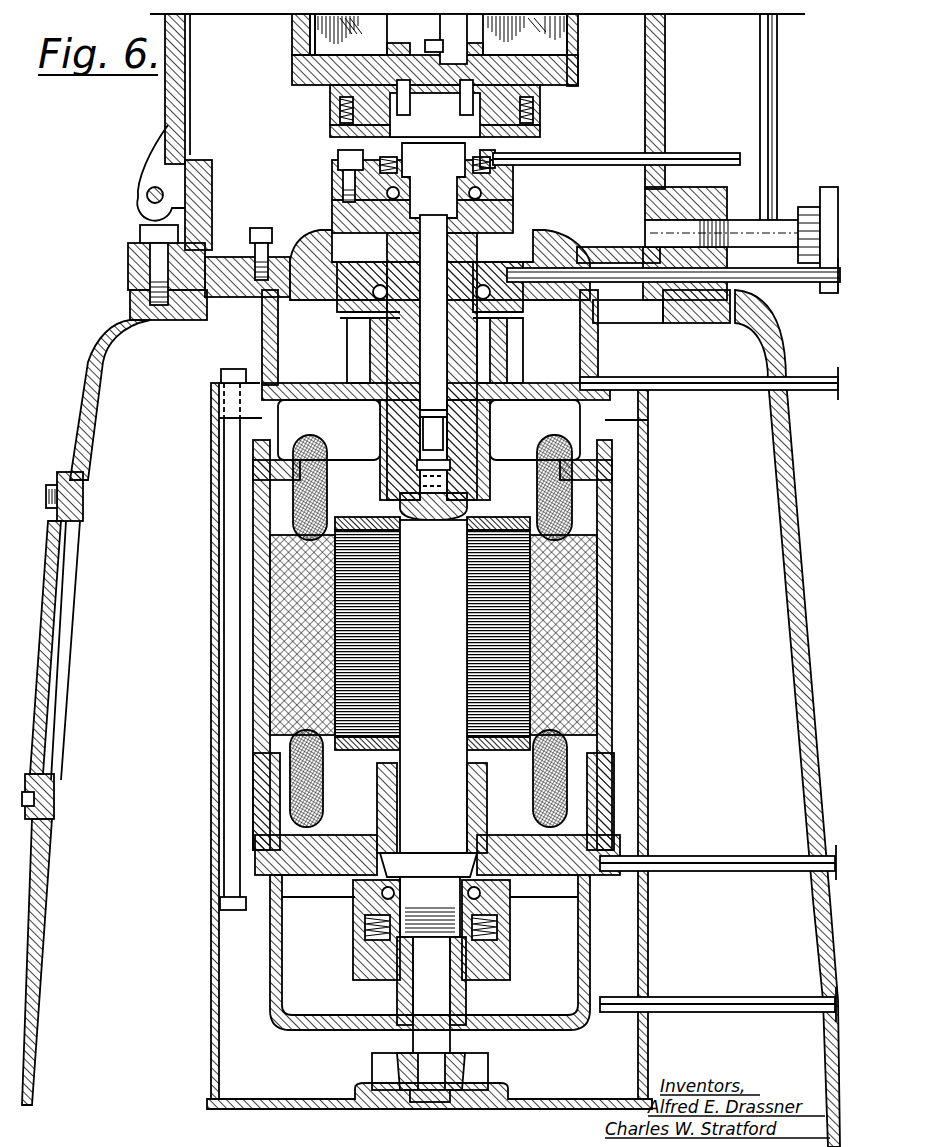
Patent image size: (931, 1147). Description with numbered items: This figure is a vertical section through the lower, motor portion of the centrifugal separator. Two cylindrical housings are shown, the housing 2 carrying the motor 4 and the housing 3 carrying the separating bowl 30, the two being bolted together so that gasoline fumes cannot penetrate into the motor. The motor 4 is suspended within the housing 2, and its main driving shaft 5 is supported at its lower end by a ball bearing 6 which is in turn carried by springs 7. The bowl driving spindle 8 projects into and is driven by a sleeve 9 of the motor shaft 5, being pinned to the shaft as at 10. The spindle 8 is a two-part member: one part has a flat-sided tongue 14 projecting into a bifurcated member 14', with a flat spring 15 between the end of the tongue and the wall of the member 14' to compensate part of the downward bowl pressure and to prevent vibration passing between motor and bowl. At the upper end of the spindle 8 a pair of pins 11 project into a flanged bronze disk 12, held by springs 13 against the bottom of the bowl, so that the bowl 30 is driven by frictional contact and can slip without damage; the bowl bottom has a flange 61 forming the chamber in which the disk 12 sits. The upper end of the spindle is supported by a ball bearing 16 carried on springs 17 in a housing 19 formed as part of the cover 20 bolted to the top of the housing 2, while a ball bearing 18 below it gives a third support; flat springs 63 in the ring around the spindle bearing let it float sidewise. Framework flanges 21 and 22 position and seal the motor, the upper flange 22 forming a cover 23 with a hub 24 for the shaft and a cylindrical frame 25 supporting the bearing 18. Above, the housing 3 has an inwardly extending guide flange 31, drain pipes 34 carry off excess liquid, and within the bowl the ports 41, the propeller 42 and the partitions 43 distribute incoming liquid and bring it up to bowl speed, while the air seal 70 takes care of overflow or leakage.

The housing 2 is at (785, 457).
The housing 3 is at (666, 50).
The motor 4 is at (600, 630).
The motor or main driving shaft 5 is at (432, 809).
The ball bearing 6 is at (492, 900).
The springs 7 is at (492, 937).
The bowl driving spindle 8 is at (433, 312).
The sleeve 9 is at (402, 359).
The pin 10 is at (410, 480).
The pins 11 is at (466, 105).
The flanged bronze disk 12 is at (543, 95).
The springs 13 is at (543, 127).
The flat-sided tongue 14 is at (475, 438).
The bifurcated member 14' is at (475, 481).
The flat spring 15 is at (427, 467).
The ball bearing 16 is at (515, 197).
The springs 17 is at (515, 213).
The ball bearing 18 is at (492, 300).
The housing 19 is at (336, 181).
The cover 20 is at (312, 228).
The framework flange 21 is at (607, 825).
The framework flange 22 is at (612, 450).
The cover 23 is at (302, 398).
The hub 24 is at (494, 420).
The cylindrical frame 25 is at (507, 355).
The separating bowl 30 is at (580, 33).
The guide flange 31 is at (292, 29).
The drain pipes 34 is at (777, 118).
The ports 41 is at (482, 27).
The propeller 42 is at (437, 26).
The partitions 43 is at (306, 44).
The flange 61 is at (363, 893).
The flat springs 63 is at (336, 163).
The air seal 70 is at (821, 203).